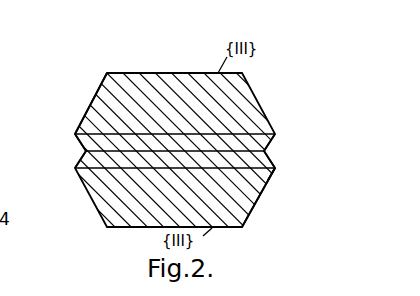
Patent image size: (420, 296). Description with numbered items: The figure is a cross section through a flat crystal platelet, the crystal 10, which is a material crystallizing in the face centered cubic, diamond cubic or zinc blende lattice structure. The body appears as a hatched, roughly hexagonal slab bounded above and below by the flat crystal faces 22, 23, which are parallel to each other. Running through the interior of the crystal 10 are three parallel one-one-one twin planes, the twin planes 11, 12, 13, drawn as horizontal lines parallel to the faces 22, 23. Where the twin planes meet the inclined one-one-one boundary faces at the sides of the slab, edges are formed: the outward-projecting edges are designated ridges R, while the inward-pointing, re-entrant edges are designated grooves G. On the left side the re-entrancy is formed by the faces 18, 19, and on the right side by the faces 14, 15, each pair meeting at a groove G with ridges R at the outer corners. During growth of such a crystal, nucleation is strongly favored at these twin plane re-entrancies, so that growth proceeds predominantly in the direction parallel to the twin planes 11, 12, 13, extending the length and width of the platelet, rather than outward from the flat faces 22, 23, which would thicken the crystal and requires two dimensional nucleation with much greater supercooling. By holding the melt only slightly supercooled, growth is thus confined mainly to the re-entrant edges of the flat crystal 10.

The crystal 10 is at (133, 227).
The twin plane 11 is at (263, 187).
The twin plane 12 is at (84, 124).
The twin plane 13 is at (271, 162).
The face 14 is at (273, 139).
The face 15 is at (275, 164).
The face 18 is at (81, 144).
The face 19 is at (81, 156).
The flat crystal face 22 is at (232, 228).
The flat crystal face 23 is at (197, 73).
The ridge R is at (75, 135).
The groove G is at (86, 152).